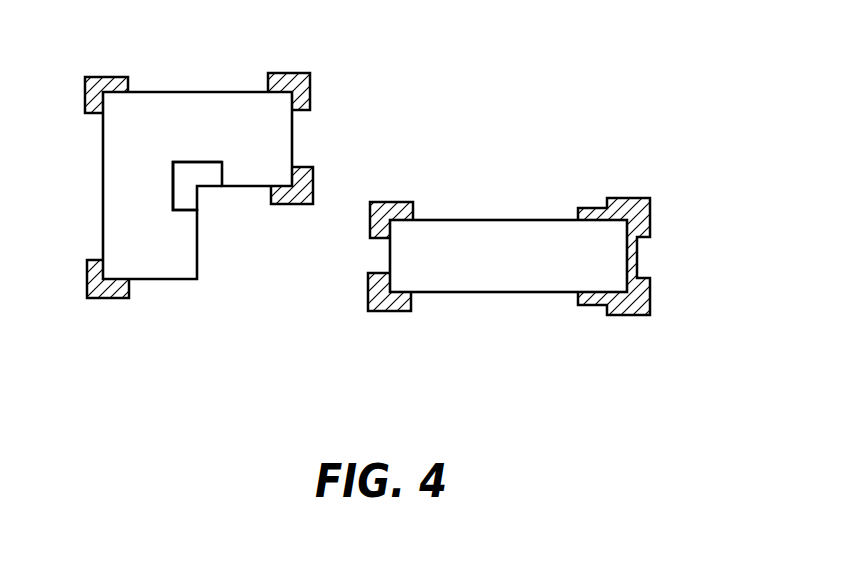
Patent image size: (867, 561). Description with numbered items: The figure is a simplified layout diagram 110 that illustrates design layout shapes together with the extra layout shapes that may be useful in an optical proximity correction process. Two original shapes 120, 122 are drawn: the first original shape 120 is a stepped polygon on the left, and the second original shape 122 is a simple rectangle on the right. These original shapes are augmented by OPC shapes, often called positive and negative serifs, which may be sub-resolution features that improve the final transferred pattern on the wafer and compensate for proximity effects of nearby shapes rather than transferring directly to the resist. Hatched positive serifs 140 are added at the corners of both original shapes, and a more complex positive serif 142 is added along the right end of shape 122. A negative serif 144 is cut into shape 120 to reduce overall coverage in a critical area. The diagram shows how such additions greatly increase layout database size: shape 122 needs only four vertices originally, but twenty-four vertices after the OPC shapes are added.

The simplified layout diagram 110 is at (597, 73).
The original shape 120 is at (163, 88).
The original shape 122 is at (452, 220).
The positive serifs 140 is at (87, 273).
The serif 142 is at (652, 207).
The negative serif 144 is at (185, 190).